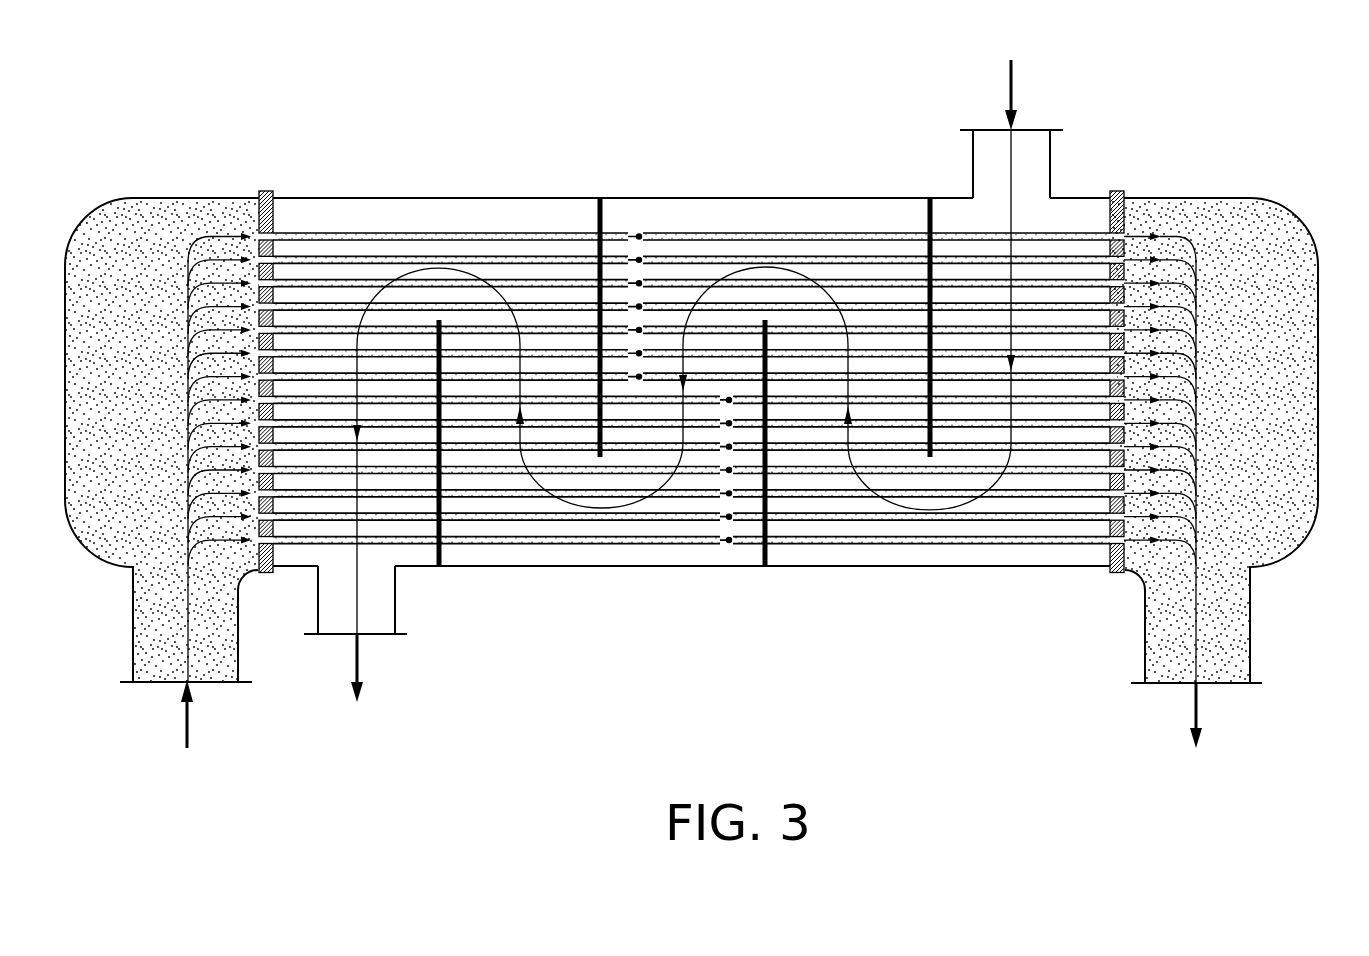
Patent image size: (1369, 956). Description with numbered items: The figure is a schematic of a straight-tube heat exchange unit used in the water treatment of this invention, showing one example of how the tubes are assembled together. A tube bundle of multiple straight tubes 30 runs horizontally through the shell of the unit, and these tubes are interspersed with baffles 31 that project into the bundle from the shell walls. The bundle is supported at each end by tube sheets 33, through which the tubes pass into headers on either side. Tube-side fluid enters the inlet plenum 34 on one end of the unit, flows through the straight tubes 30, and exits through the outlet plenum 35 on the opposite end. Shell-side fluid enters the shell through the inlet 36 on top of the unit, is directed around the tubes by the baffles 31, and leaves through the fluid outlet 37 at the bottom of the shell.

The straight tubes 30 is at (763, 232).
The baffles 31 is at (442, 553).
The tube sheets 33 is at (263, 192).
The inlet plenum 34 is at (102, 206).
The outlet plenum 35 is at (1291, 208).
The inlet 36 is at (1035, 128).
The fluid outlet 37 is at (374, 636).